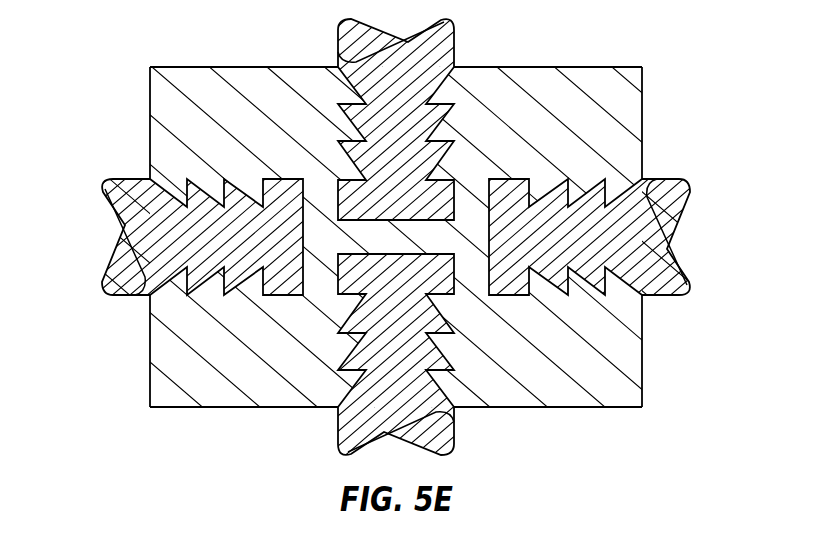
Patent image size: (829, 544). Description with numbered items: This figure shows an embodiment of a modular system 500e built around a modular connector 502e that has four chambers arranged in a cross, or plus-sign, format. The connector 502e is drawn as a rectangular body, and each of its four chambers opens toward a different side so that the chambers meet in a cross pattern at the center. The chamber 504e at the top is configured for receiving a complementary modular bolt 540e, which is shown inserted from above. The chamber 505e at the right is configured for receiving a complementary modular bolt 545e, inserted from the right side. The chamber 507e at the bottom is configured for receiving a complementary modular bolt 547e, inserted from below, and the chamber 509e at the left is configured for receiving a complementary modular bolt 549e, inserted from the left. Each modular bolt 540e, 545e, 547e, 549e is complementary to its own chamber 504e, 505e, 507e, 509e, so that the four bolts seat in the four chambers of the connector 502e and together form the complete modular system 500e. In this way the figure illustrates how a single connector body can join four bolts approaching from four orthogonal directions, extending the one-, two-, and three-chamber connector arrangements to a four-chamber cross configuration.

The modular system 500e is at (139, 54).
The modular connector 502e is at (180, 367).
The chamber 504e is at (343, 88).
The modular bolt 540e is at (433, 63).
The chamber 509e is at (188, 180).
The modular bolt 549e is at (162, 236).
The modular bolt 545e is at (623, 215).
The chamber 505e is at (625, 286).
The modular bolt 547e is at (378, 383).
The chamber 507e is at (440, 384).